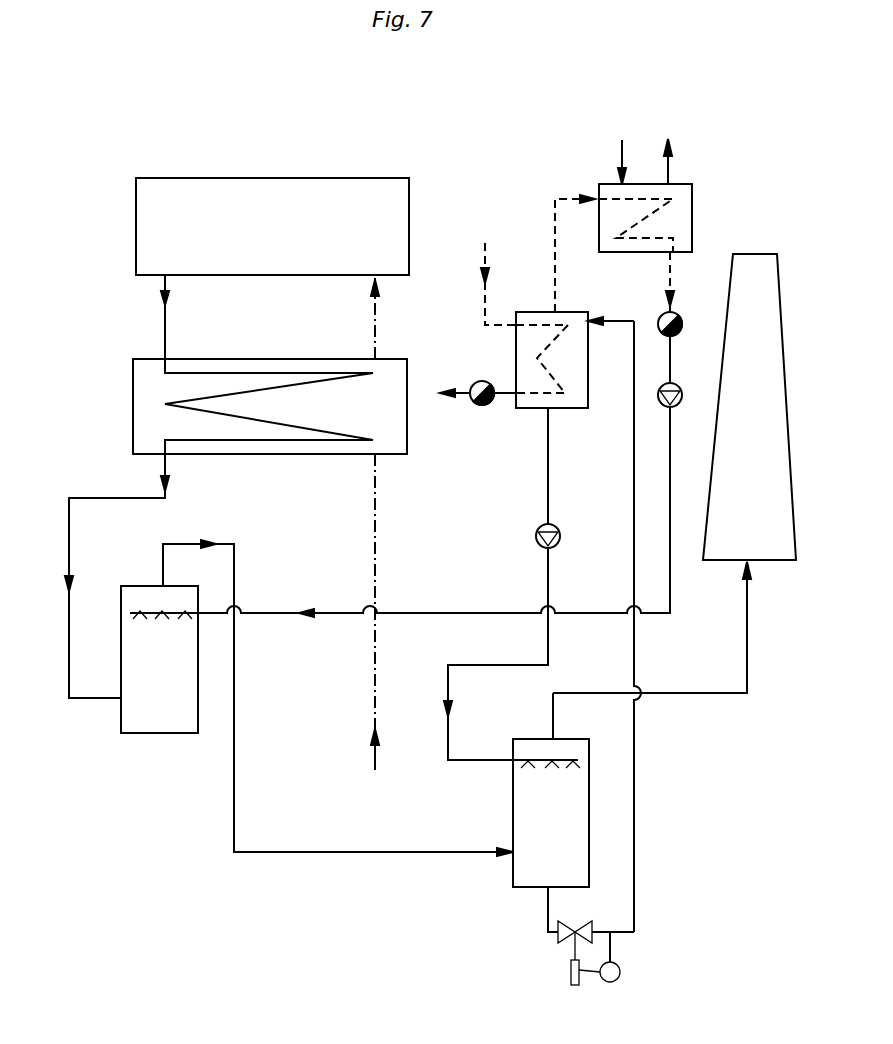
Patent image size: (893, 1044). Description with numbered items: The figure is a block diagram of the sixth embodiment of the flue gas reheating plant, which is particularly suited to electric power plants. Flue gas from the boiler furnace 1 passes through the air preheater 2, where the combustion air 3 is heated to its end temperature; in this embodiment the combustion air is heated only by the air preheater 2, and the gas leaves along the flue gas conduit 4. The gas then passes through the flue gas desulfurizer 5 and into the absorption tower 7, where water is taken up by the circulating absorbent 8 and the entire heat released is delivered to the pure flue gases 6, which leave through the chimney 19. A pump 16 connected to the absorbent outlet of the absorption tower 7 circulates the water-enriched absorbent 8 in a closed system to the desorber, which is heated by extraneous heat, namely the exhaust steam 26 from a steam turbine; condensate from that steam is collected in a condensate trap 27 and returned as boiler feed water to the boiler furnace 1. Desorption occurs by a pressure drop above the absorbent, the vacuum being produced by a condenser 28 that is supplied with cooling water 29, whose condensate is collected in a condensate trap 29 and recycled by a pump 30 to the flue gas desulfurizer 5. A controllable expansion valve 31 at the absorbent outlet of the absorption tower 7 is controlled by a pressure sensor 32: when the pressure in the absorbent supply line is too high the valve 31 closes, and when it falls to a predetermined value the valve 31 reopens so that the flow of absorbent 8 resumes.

The boiler furnace 1 is at (256, 200).
The air preheater 2 is at (146, 396).
The combustion air 3 is at (380, 333).
The supply line 4 is at (160, 312).
The flue gas desulfurizer 5 is at (137, 600).
The pure flue gases 6 is at (232, 781).
The absorption tower 7 is at (527, 750).
The absorbent 8 is at (632, 456).
The pump 16 is at (560, 532).
The chimney 19 is at (724, 550).
The exhaust steam 26 is at (486, 251).
The condensate trap 27 is at (478, 408).
The condenser 28 is at (692, 225).
The cooling water / condensate trap 29 is at (681, 317).
The pump 30 is at (683, 390).
The controllable expansion valve 31 is at (563, 938).
The pressure sensor 32 is at (621, 972).